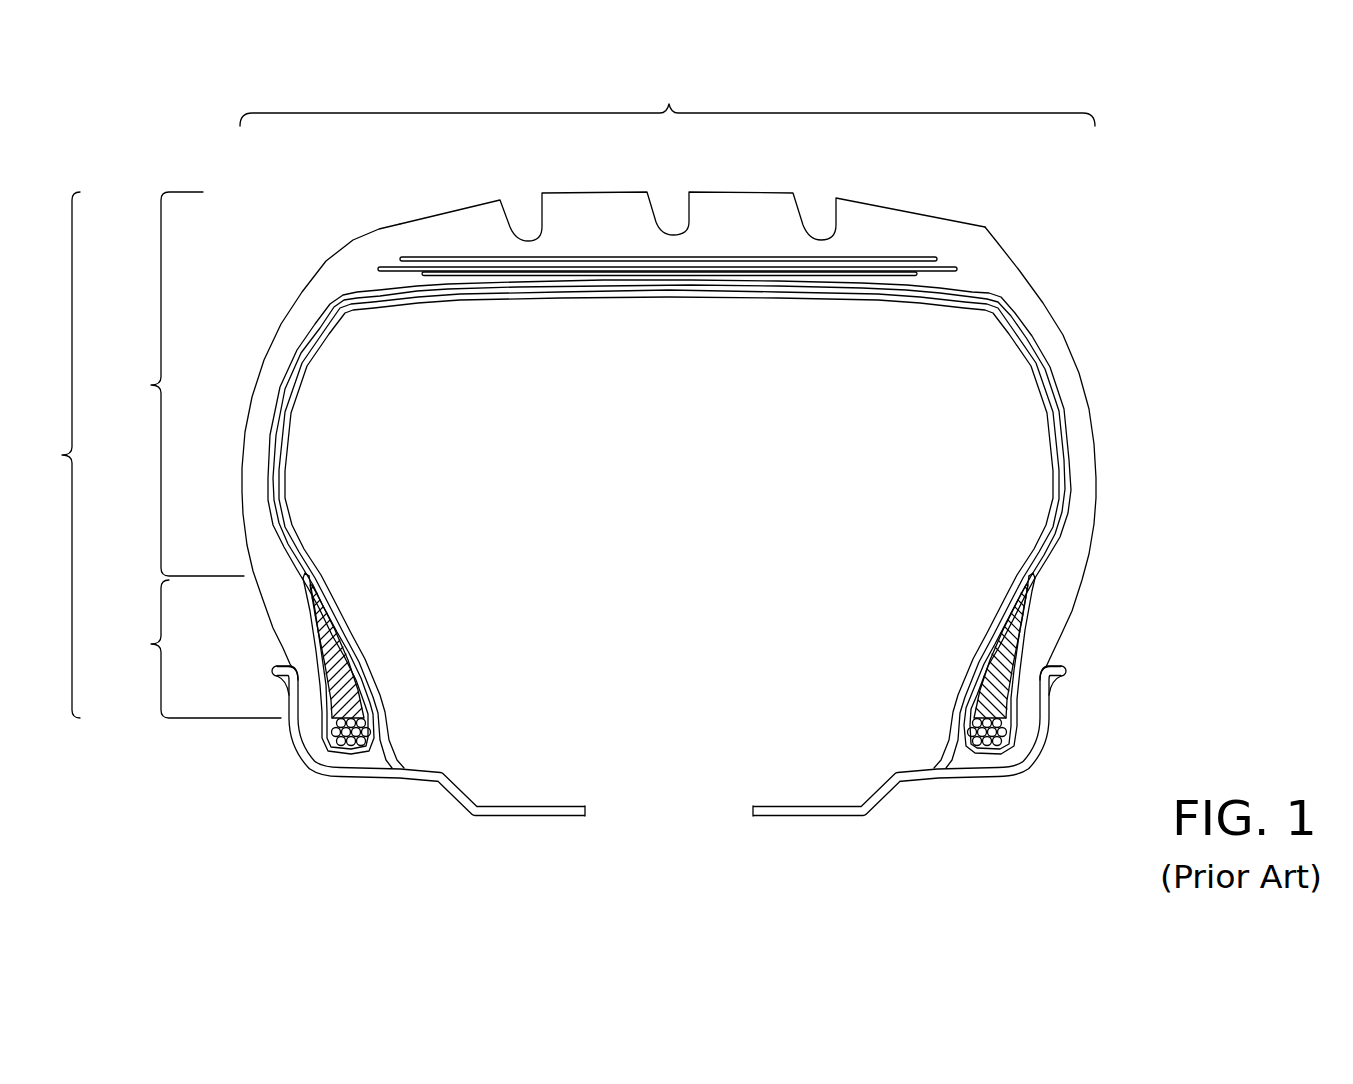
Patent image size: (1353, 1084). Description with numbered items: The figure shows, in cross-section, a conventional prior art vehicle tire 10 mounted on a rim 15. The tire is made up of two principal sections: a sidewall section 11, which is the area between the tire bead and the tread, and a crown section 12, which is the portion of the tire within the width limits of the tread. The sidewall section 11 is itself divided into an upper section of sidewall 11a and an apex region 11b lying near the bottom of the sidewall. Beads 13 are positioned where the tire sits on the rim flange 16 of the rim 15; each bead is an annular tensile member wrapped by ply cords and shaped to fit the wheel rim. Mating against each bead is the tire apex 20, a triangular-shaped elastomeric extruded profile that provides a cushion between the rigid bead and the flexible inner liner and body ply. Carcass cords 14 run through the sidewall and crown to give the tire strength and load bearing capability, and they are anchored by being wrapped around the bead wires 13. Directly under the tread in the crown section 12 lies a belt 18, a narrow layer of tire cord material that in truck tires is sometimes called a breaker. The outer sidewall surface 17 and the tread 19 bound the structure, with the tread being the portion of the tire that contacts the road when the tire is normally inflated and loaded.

The vehicle tire 10 is at (749, 404).
The sidewall section 11 is at (52, 455).
The upper section of sidewall 11a is at (177, 384).
The apex region of the sidewall 11b is at (195, 649).
The crown section 12 is at (667, 96).
The beads 13 is at (990, 743).
The carcass cords 14 is at (370, 311).
The rim 15 is at (818, 818).
The rim flange 16 is at (1052, 679).
The sidewall 17 is at (1086, 440).
The belt 18 is at (421, 273).
The tread 19 is at (597, 216).
The tire apex 20 is at (997, 683).